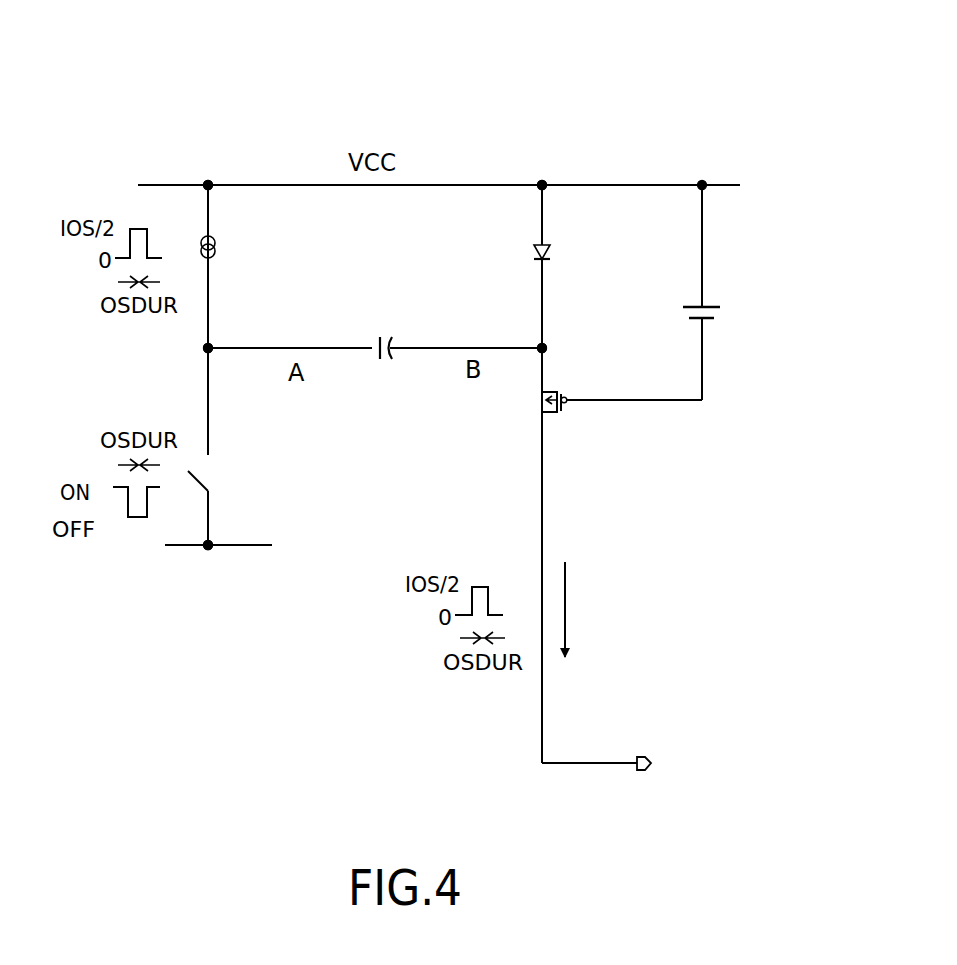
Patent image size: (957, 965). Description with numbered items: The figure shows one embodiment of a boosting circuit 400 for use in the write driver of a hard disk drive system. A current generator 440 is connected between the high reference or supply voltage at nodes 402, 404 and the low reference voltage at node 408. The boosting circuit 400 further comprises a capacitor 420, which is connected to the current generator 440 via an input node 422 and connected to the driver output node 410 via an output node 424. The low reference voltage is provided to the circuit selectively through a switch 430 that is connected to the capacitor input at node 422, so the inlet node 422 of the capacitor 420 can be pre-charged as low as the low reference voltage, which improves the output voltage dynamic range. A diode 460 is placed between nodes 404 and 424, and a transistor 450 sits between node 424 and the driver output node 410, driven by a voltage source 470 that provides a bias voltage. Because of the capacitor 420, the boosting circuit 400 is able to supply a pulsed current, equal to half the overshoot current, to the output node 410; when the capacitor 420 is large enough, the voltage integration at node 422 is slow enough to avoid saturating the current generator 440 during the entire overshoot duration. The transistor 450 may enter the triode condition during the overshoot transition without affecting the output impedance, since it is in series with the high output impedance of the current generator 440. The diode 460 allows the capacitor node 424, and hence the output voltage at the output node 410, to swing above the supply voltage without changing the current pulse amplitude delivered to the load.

The boosting circuit 400 is at (148, 120).
The node 402 is at (208, 183).
The node 404 is at (542, 183).
The node 408 is at (200, 548).
The output node 410 is at (645, 770).
The capacitor 420 is at (388, 338).
The input node 422 is at (213, 346).
The output node 424 is at (547, 348).
The switch 430 is at (248, 472).
The current generator 440 is at (216, 240).
The transistor 450 is at (538, 401).
The diode 460 is at (552, 250).
The voltage source 470 is at (724, 307).